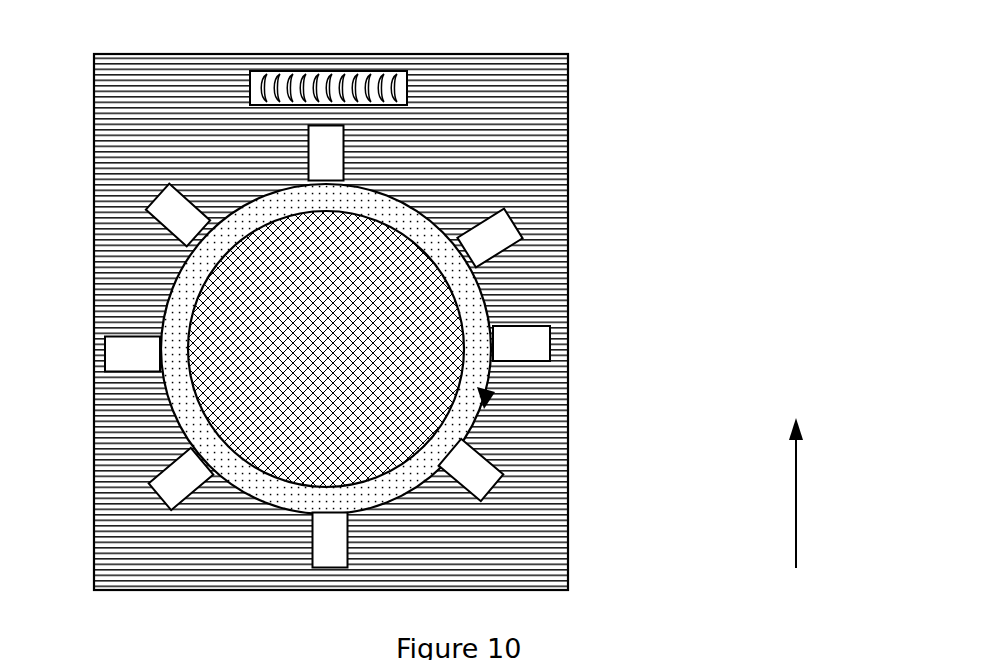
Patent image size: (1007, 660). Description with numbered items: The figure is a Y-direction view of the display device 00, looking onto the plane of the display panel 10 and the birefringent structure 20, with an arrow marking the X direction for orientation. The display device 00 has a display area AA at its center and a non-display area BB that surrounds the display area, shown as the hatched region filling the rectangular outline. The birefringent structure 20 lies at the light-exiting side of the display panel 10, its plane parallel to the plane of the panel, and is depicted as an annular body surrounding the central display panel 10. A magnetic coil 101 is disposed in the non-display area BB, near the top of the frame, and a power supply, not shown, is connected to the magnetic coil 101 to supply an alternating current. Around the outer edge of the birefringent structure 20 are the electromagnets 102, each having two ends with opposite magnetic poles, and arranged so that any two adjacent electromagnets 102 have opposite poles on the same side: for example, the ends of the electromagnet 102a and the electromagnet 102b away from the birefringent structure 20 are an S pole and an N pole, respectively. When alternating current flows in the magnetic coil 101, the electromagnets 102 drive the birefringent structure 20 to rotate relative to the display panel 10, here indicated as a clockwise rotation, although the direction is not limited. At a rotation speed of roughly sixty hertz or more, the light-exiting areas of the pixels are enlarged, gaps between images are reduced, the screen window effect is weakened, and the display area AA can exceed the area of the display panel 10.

The display device 00 is at (331, 301).
The magnetic coil 101 is at (399, 88).
The non-display area BB is at (510, 183).
The birefringent structure 20 is at (484, 286).
The display panel 10 is at (370, 468).
The electromagnets 102 is at (424, 347).
The electromagnet 102a is at (505, 466).
The electromagnet 102b is at (517, 343).
The direction X is at (796, 477).